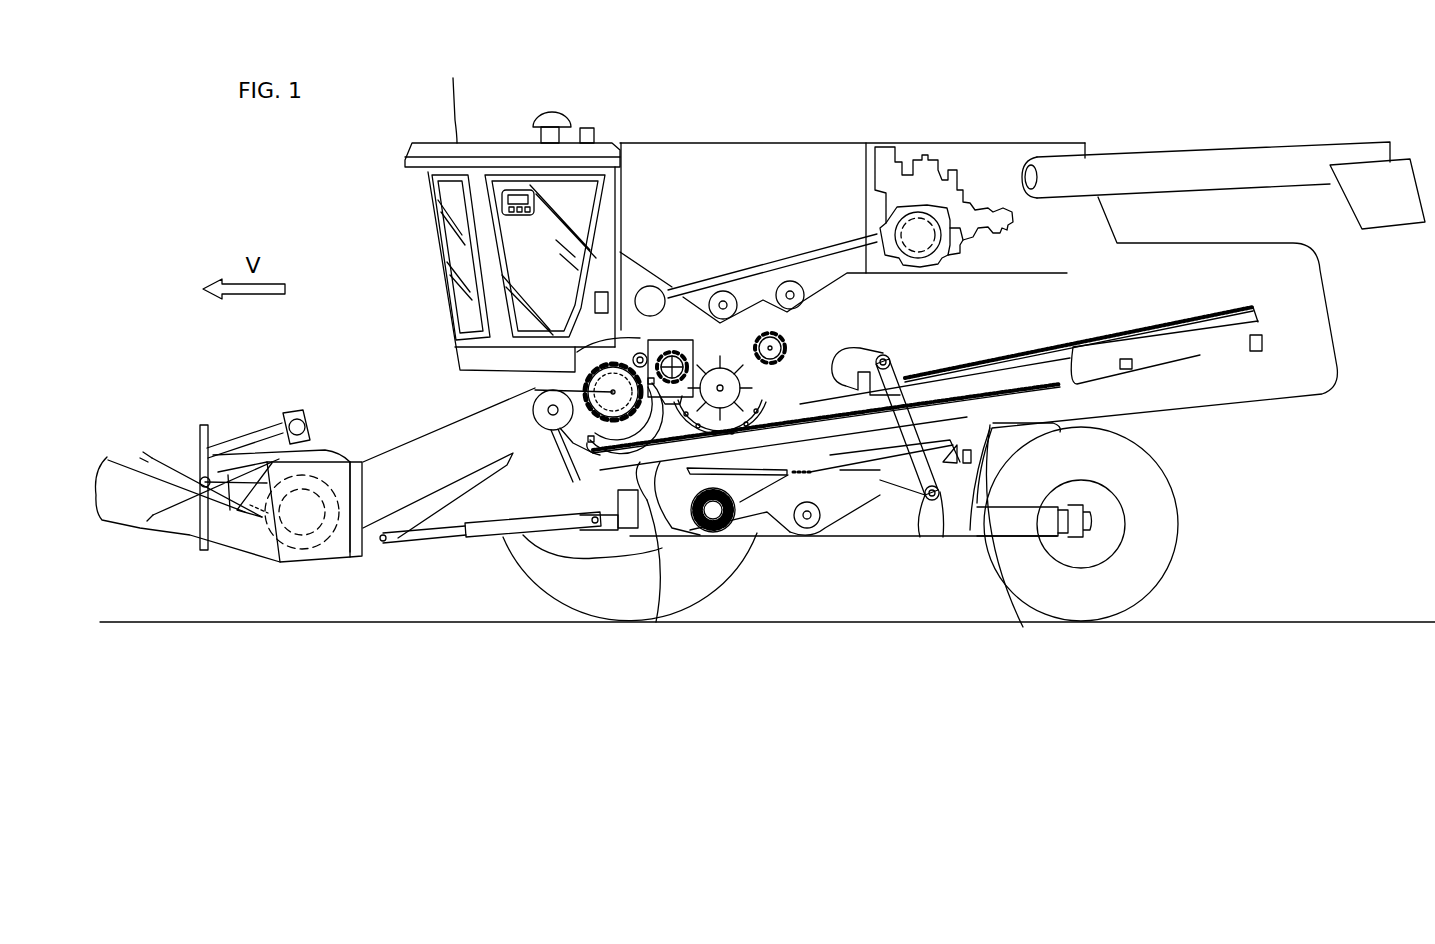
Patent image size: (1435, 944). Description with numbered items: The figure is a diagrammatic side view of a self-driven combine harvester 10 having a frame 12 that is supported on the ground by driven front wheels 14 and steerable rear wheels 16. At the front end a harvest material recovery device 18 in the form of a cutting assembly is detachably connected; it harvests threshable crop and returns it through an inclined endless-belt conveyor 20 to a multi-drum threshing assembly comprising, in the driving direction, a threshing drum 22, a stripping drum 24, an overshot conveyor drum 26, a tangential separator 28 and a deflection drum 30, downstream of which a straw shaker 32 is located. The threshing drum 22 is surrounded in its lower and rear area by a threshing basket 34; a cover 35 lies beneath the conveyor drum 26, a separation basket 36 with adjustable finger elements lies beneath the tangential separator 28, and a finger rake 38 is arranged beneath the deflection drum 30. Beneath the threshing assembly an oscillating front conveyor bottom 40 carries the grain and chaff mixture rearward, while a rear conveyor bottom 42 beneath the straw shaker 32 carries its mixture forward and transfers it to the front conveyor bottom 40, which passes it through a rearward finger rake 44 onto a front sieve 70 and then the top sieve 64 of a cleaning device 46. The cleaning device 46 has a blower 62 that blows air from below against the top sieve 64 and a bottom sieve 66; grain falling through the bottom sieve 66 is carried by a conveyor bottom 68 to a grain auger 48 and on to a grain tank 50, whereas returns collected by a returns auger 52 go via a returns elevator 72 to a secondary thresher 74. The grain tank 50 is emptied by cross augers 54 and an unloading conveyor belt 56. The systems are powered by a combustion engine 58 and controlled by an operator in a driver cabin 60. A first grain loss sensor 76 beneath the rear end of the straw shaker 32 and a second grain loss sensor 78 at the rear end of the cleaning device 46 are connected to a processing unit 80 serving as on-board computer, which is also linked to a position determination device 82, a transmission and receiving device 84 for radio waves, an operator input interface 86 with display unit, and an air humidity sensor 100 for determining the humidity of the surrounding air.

The combine harvester 10 is at (768, 113).
The frame 12 is at (903, 538).
The front wheels 14 is at (573, 568).
The rear wheels 16 is at (1163, 545).
The harvest material recovery device 18 is at (305, 550).
The conveyor 20 is at (420, 480).
The threshing drum 22 is at (533, 390).
The stripping drum 24 is at (640, 353).
The conveyor drum 26 is at (641, 345).
The tangential separator 28 is at (716, 367).
The deflection drum 30 is at (783, 346).
The straw shaker 32 is at (1043, 345).
The threshing basket 34 is at (567, 440).
The cover 35 is at (670, 405).
The separation basket 36 is at (1017, 367).
The finger rake 38 is at (892, 352).
The front conveyor bottom 40 is at (662, 500).
The rear conveyor bottom 42 is at (1000, 393).
The rearward finger rake 44 is at (857, 410).
The cleaning device 46 is at (773, 512).
The grain auger 48 is at (808, 528).
The grain tank 50 is at (742, 192).
The returns auger 52 is at (933, 500).
The cross augers 54 is at (724, 292).
The unloading conveyor belt 56 is at (1215, 160).
The combustion engine 58 is at (922, 165).
The driver cabin 60 is at (532, 250).
The blower 62 is at (716, 533).
The top sieve 64 is at (848, 470).
The bottom sieve 66 is at (870, 470).
The conveyor bottom 68 is at (912, 500).
The front sieve 70 is at (785, 448).
The returns elevator 72 is at (1023, 627).
The secondary thresher 74 is at (943, 537).
The first grain loss sensor 76 is at (1263, 346).
The second grain loss sensor 78 is at (975, 460).
The processing unit 80 is at (595, 300).
The position determination device 82 is at (554, 112).
The transmission and receiving device 84 is at (452, 103).
The operator input interface 86 is at (517, 190).
The air humidity sensor 100 is at (588, 128).